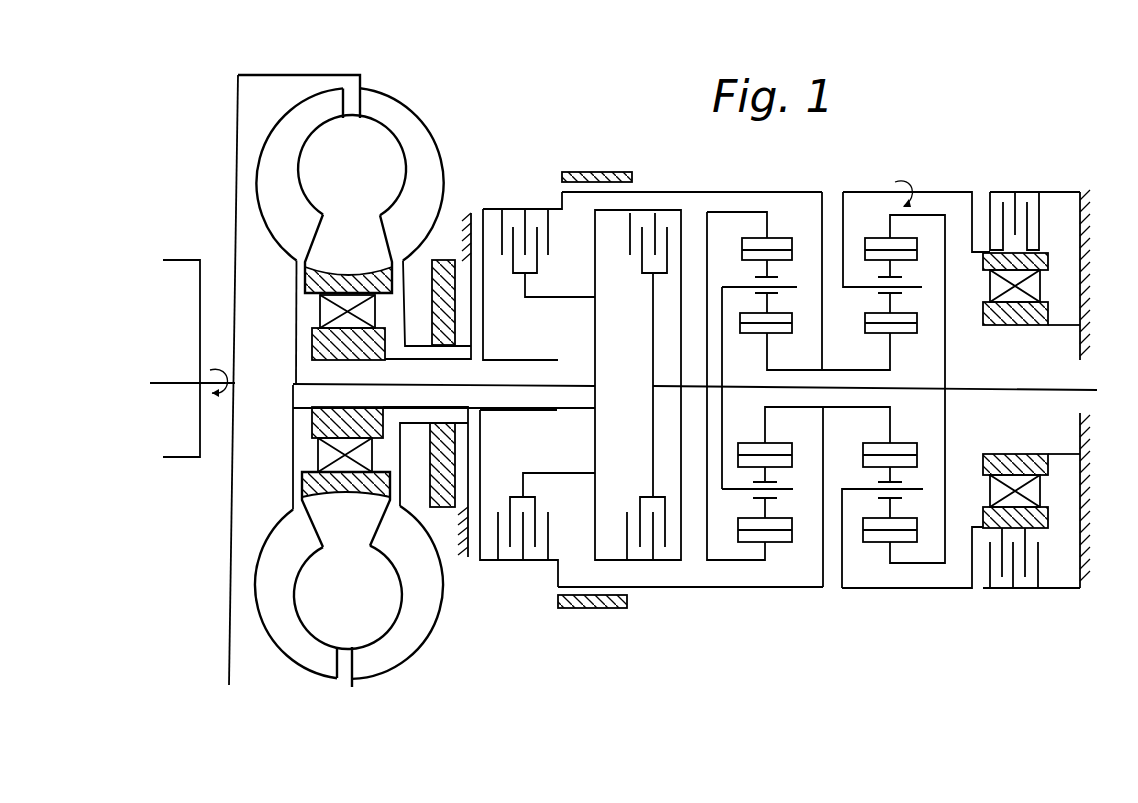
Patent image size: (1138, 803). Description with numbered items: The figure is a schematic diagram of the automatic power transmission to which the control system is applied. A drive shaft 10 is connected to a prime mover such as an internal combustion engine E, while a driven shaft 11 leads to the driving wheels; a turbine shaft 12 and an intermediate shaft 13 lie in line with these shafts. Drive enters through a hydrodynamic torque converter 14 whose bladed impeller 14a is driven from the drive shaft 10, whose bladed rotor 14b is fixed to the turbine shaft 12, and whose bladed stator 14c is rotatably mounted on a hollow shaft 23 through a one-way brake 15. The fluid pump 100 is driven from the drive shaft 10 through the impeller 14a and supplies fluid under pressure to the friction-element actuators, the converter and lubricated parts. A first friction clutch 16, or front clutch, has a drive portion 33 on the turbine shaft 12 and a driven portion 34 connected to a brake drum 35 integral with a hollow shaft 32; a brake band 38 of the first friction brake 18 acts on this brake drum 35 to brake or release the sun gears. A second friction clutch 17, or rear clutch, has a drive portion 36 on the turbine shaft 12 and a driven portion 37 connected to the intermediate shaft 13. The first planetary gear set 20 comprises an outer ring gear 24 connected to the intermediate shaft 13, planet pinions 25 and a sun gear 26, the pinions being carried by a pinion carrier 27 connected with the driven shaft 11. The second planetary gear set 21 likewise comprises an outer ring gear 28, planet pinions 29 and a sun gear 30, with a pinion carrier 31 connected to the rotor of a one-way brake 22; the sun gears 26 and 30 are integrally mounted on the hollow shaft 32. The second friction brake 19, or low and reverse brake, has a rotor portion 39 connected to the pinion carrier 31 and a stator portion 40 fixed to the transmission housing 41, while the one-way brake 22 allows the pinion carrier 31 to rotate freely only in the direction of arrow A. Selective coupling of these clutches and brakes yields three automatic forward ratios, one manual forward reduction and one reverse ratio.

The drive shaft 10 is at (202, 400).
The driven shaft 11 is at (1057, 389).
The turbine shaft 12 is at (294, 388).
The intermediate shaft 13 is at (672, 387).
The hydrodynamic torque converter 14 is at (407, 105).
The bladed impeller 14a is at (440, 196).
The bladed rotor 14b is at (294, 196).
The bladed reaction element 14c is at (366, 258).
The one-way brake 15 is at (320, 312).
The first friction clutch 16 is at (522, 205).
The second friction clutch 17 is at (679, 206).
The first friction brake 18 is at (593, 169).
The second friction brake 19 is at (1023, 188).
The first planetary gear set 20 is at (785, 233).
The second planetary gear set 21 is at (865, 233).
The one-way brake 22 is at (987, 284).
The hollow shaft 23 is at (403, 360).
The outer ring gear 24 is at (752, 238).
The planet pinions 25 is at (745, 258).
The sun gear 26 is at (778, 333).
The pinion carrier 27 is at (722, 380).
The outer ring gear 28 is at (905, 240).
The planet pinions 29 is at (875, 320).
The sun gear 30 is at (907, 334).
The pinion carrier 31 is at (841, 256).
The hollow shaft 32 is at (843, 370).
The drive portion 33 is at (541, 266).
The driven portion 34 is at (551, 217).
The brake drum 35 is at (669, 192).
The drive portion 36 is at (630, 240).
The driven portion 37 is at (642, 268).
The brake band 38 is at (627, 173).
The rotor portion 39 is at (1030, 249).
The stator portion 40 is at (1041, 212).
The transmission housing 41 is at (471, 218).
The fluid pump 100 is at (442, 260).
The internal combustion engine E is at (188, 341).
The arrow A is at (218, 361).